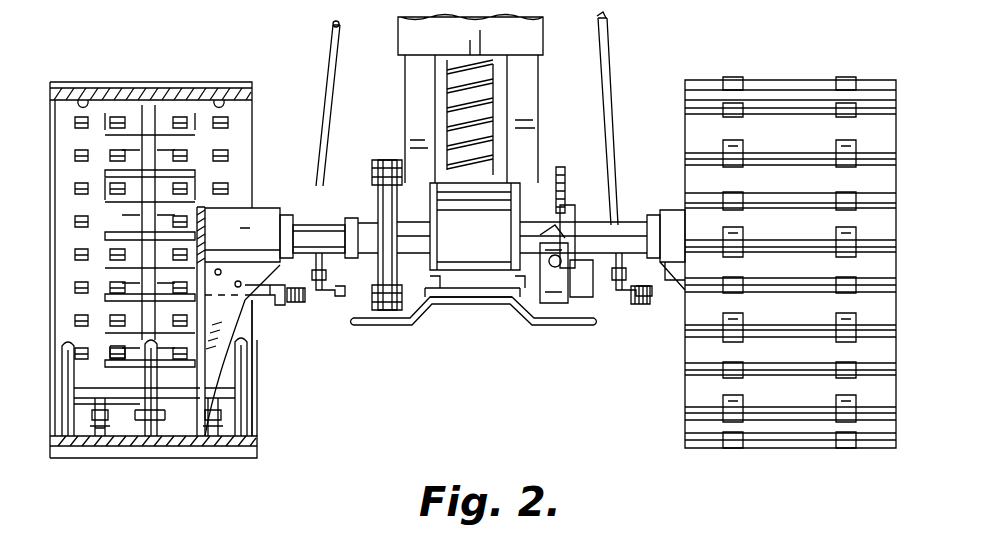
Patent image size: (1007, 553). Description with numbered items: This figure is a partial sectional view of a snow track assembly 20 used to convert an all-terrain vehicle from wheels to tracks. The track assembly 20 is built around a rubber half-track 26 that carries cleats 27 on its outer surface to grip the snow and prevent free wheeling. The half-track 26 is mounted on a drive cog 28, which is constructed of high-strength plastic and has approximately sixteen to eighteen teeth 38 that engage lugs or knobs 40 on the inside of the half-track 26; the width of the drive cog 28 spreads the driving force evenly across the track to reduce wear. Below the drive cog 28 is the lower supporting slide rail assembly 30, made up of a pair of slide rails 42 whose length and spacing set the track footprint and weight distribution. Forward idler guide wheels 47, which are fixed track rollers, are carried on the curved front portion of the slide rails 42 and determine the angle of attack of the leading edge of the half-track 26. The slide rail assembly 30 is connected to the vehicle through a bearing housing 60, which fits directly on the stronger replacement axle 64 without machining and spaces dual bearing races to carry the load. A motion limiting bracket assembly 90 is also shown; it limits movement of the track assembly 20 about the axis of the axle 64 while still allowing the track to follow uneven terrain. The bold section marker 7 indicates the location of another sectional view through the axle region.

The track assembly 20 is at (260, 394).
The rubber half-track 26 is at (186, 84).
The cleats 27 is at (766, 100).
The drive cog 28 is at (188, 130).
The slide rail assembly 30 is at (252, 351).
The teeth 38 is at (118, 100).
The lugs or knobs 40 is at (224, 151).
The slide rails 42 is at (100, 456).
The forward idler guide wheels 47 is at (245, 340).
The bearing housing 60 is at (258, 206).
The replacement axle 64 is at (625, 232).
The section line 7 is at (318, 230).
The motion limiting bracket assembly 90 is at (614, 32).